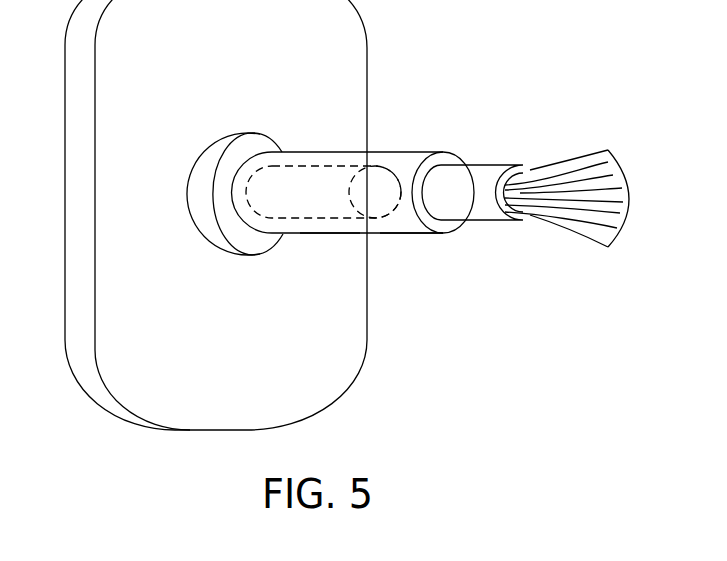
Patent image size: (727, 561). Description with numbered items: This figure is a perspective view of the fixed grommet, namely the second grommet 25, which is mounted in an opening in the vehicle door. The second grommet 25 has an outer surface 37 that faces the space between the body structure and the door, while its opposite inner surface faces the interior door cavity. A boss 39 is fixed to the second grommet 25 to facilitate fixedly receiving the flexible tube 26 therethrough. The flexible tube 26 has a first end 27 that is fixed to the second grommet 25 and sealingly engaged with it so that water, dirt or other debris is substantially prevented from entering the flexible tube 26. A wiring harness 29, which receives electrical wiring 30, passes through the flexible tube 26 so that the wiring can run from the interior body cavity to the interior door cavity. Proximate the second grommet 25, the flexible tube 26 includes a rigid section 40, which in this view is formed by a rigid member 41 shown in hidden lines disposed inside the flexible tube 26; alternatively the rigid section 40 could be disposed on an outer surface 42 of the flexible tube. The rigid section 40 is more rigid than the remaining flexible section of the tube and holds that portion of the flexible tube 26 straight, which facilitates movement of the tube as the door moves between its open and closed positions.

The second grommet 25 is at (372, 58).
The flexible tube 26 is at (407, 140).
The first end 27 is at (235, 170).
The wiring harness 29 is at (495, 152).
The electrical wiring 30 is at (587, 160).
The outer surface 37 is at (150, 322).
The boss 39 is at (281, 133).
The rigid section 40 is at (330, 234).
The rigid member 41 is at (332, 164).
The outer surface 42 is at (410, 234).